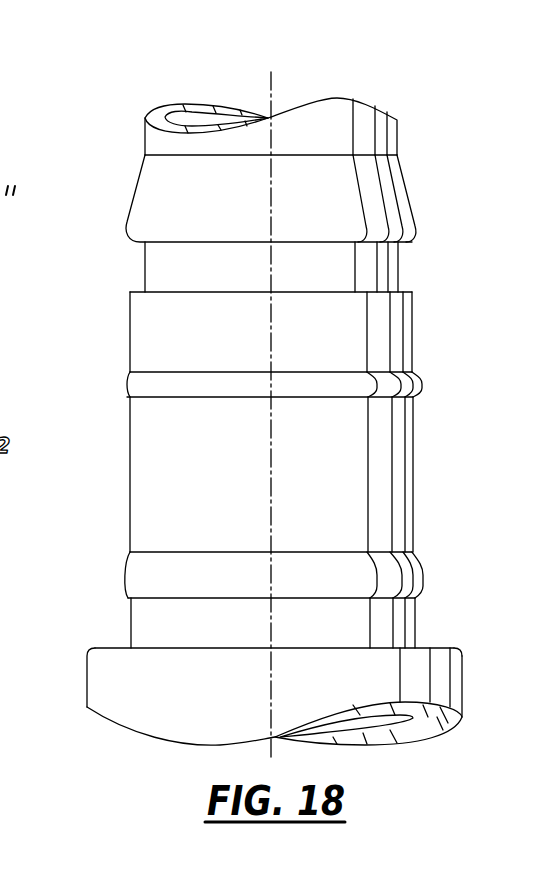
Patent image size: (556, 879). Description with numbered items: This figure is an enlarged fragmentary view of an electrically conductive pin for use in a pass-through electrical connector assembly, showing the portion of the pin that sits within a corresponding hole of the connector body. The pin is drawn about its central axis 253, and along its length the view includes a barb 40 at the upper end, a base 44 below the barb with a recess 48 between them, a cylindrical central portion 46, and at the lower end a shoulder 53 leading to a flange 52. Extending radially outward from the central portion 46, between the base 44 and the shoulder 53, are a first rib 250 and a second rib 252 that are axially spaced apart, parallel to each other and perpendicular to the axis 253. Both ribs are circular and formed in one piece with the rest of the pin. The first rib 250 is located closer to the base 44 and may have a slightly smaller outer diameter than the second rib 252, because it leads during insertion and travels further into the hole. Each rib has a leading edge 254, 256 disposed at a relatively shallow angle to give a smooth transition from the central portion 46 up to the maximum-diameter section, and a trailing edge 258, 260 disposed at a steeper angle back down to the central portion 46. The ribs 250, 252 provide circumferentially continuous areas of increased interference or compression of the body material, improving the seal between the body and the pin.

The axis 253 is at (272, 88).
The barb 40 is at (408, 202).
The base 44 is at (374, 248).
The recess 48 is at (173, 263).
The central portion 46 is at (415, 461).
The first rib 250 is at (427, 386).
The leading edge 254 is at (133, 380).
The trailing edge 258 is at (127, 398).
The second rib 252 is at (435, 560).
The leading edge 256 is at (128, 571).
The trailing edge 260 is at (128, 600).
The shoulder 53 is at (440, 648).
The flange 52 is at (445, 677).